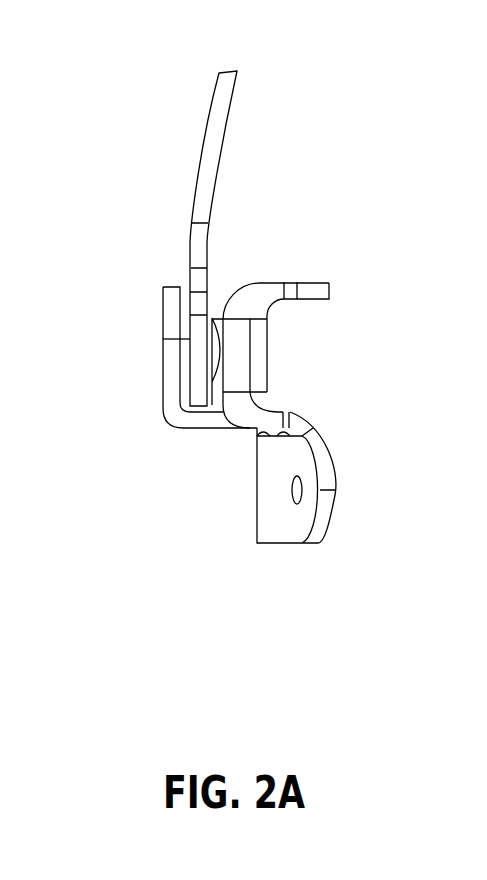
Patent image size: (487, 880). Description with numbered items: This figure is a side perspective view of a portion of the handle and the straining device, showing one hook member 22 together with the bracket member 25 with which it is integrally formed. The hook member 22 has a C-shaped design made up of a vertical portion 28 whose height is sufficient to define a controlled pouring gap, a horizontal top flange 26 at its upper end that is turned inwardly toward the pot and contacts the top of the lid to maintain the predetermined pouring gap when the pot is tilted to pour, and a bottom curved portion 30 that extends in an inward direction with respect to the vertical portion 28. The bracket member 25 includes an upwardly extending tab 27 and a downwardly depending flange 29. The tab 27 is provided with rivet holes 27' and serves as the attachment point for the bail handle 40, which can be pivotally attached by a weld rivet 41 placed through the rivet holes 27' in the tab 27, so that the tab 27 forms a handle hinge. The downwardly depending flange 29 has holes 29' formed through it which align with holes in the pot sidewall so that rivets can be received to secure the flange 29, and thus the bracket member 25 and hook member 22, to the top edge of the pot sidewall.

The bail handle 40 is at (198, 162).
The weld rivet 41 is at (212, 318).
The upwardly extending tab 27 is at (103, 347).
The rivet holes 27' is at (115, 368).
The hook member 22 is at (240, 413).
The vertical portion 28 is at (263, 357).
The horizontal top flange 26 is at (316, 300).
The bottom curved portion 30 is at (282, 411).
The downwardly depending flange 29 is at (334, 477).
The rivet holes 29' is at (266, 554).
The bracket member 25 is at (343, 426).